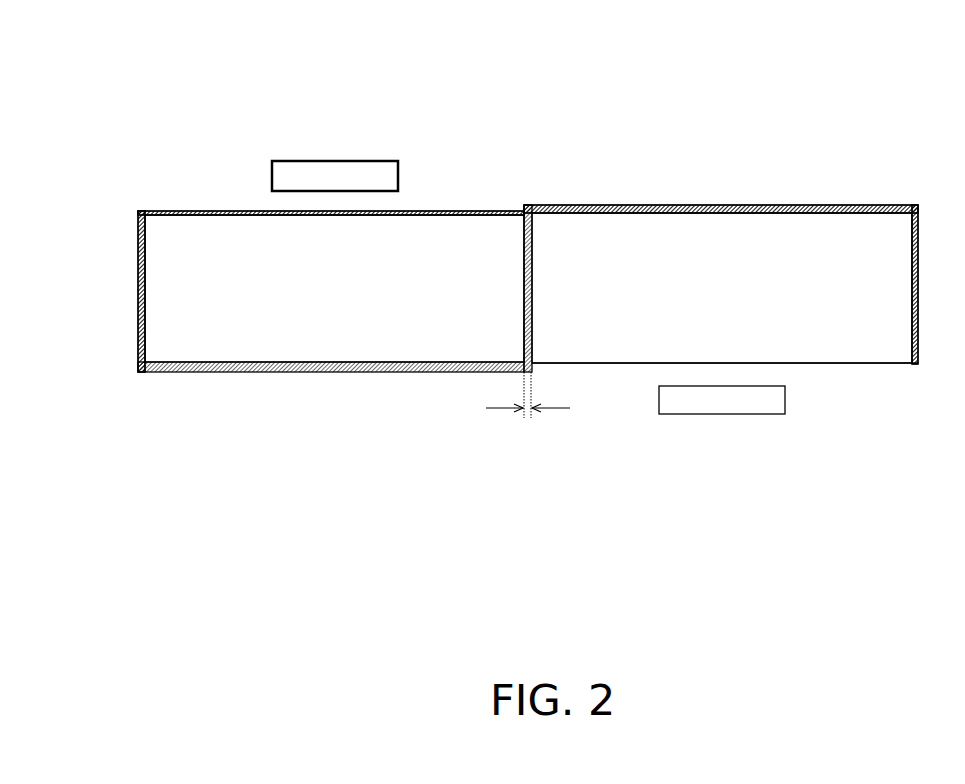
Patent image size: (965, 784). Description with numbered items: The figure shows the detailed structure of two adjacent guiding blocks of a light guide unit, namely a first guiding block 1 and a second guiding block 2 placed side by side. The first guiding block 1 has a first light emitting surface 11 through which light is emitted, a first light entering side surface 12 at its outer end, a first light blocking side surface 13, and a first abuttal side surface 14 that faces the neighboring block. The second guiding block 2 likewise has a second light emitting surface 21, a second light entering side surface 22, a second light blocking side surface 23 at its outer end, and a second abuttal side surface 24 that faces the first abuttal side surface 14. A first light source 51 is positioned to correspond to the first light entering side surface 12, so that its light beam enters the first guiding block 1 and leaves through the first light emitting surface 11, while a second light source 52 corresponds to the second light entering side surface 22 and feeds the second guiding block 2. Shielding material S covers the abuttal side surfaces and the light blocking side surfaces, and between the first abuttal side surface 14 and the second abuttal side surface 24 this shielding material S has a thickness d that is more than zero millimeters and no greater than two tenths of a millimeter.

The first guiding block 1 is at (872, 56).
The second guiding block 2 is at (185, 56).
The first light emitting surface 11 is at (760, 250).
The first light entering side surface 12 is at (851, 363).
The first light blocking side surface 13 is at (680, 206).
The first abuttal side surface 14 is at (533, 265).
The second light emitting surface 21 is at (288, 250).
The second light entering side surface 22 is at (372, 213).
The second light blocking side surface 23 is at (207, 372).
The second abuttal side surface 24 is at (524, 265).
The first light source 51 is at (722, 400).
The second light source 52 is at (335, 177).
The shielding material S is at (526, 207).
The thickness of the shielding material d is at (528, 395).